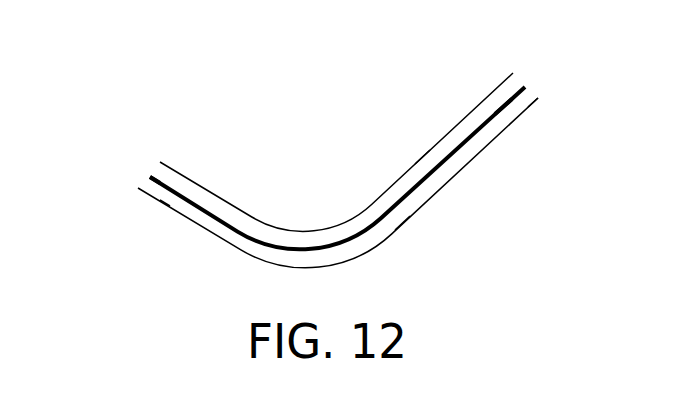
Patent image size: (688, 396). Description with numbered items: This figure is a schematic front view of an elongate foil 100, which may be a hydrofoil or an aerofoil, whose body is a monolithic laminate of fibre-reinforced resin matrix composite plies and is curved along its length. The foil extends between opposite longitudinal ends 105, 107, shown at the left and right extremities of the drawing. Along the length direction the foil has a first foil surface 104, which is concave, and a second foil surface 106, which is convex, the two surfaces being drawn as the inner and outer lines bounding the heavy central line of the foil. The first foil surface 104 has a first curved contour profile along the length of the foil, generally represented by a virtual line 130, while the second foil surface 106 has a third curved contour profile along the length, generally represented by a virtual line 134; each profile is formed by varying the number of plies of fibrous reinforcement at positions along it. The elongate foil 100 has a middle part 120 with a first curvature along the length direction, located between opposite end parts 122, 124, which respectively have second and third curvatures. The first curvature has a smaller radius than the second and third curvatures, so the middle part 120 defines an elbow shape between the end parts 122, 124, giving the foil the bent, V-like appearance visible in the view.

The elongate foil 100 is at (270, 166).
The first foil surface 104 is at (192, 201).
The longitudinal end 105 is at (150, 177).
The second foil surface 106 is at (233, 240).
The longitudinal end 107 is at (533, 98).
The middle part 120 is at (320, 243).
The end part 122 is at (168, 191).
The end part 124 is at (502, 110).
The virtual line 130 is at (422, 160).
The virtual line 134 is at (400, 225).